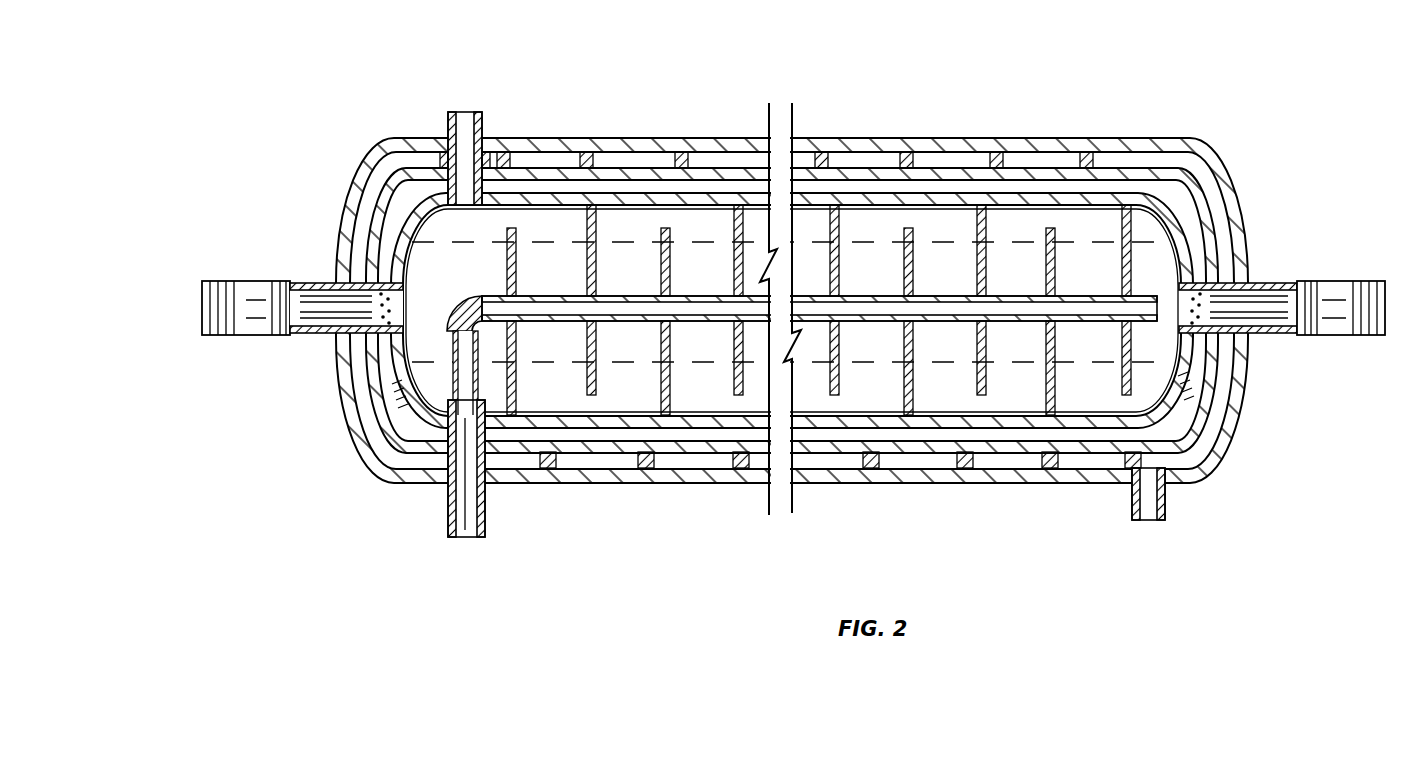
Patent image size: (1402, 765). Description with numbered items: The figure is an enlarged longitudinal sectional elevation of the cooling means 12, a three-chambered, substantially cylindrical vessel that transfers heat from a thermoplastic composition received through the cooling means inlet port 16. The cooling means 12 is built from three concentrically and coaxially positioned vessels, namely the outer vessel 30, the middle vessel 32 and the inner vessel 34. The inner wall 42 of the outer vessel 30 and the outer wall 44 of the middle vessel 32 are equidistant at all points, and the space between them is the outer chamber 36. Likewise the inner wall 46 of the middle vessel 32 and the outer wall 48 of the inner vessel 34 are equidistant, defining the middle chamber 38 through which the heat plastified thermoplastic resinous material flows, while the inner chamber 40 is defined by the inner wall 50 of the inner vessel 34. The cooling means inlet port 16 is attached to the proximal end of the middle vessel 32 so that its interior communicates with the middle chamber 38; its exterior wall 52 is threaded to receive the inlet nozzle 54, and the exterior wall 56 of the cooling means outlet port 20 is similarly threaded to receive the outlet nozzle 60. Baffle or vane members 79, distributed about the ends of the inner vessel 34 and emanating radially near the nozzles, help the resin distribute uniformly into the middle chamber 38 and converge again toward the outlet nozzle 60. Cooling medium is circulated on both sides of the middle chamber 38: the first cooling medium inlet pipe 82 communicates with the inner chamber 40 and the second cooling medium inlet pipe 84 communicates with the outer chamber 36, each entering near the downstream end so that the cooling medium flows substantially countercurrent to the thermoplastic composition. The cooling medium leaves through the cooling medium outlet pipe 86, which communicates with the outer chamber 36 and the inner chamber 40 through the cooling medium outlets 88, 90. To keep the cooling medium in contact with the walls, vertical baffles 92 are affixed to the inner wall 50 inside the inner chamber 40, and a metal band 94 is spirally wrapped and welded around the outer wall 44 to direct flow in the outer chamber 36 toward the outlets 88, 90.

The cooling means 12 is at (794, 260).
The cooling means inlet port 16 is at (302, 304).
The cooling means outlet port 20 is at (1282, 311).
The outer vessel 30 is at (546, 150).
The middle vessel 32 is at (792, 273).
The inner vessel 34 is at (792, 265).
The outer chamber 36 is at (792, 283).
The middle chamber 38 is at (815, 273).
The inner chamber 40 is at (837, 265).
The inner wall of outer vessel 42 is at (851, 160).
The outer wall of middle vessel 44 is at (879, 172).
The inner wall of middle vessel 46 is at (931, 188).
The outer wall of inner vessel 48 is at (959, 200).
The inner wall of inner vessel 50 is at (1041, 210).
The exterior wall of cooling means inlet port 52 is at (306, 336).
The inlet nozzle 54 is at (240, 336).
The exterior wall of cooling means outlet port 56 is at (1270, 334).
The outlet nozzle 60 is at (1338, 336).
The baffle or vane members 79 is at (396, 397).
The first cooling medium inlet pipe 82 is at (452, 500).
The second cooling medium inlet pipe 84 is at (1164, 497).
The cooling medium outlet pipe 86 is at (466, 132).
The cooling medium outlet 88 is at (446, 160).
The cooling medium outlet 90 is at (458, 210).
The vertical baffles 92 is at (742, 348).
The metal band 94 is at (680, 152).